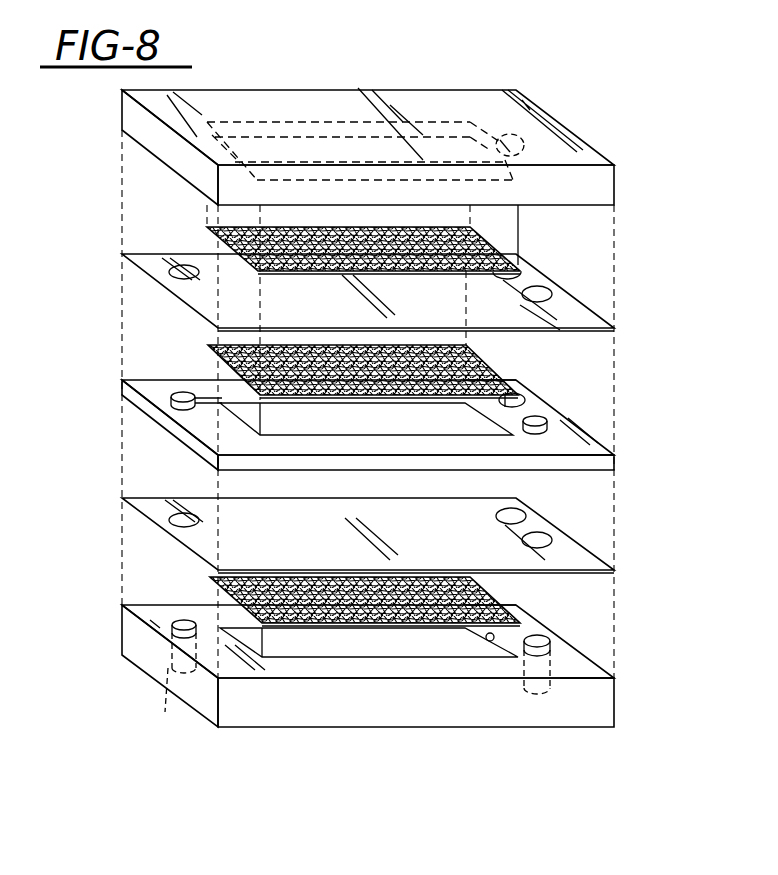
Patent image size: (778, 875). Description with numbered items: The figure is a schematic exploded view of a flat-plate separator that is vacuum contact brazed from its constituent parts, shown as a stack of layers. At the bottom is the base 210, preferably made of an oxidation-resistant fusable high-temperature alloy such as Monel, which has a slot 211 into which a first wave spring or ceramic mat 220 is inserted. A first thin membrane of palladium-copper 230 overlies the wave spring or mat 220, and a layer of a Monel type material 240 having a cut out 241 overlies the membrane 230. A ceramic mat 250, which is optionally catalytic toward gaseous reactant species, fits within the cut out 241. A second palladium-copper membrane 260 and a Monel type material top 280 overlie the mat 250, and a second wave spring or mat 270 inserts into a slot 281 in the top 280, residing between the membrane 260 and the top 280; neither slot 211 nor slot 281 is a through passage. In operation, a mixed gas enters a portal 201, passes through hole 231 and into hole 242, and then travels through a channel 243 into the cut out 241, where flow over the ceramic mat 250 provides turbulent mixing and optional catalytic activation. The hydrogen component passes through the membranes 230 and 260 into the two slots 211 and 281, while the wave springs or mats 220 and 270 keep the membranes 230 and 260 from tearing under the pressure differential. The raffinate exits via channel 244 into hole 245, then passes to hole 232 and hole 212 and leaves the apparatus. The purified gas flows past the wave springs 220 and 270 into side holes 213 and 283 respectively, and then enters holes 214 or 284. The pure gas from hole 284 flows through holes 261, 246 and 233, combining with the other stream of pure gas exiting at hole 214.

The portal 201 is at (555, 668).
The base 210 is at (123, 660).
The slot 211 is at (510, 590).
The hole 212 is at (166, 710).
The side hole 213 is at (488, 642).
The hole 214 is at (548, 638).
The first wave spring or ceramic mat 220 is at (210, 583).
The first thin membrane of palladium-copper 230 is at (145, 515).
The hole 231 is at (552, 535).
The hole 232 is at (170, 520).
The hole 233 is at (522, 508).
The layer of Monel type material 240 is at (148, 432).
The cut out 241 is at (500, 372).
The hole 242 is at (614, 455).
The channel 243 is at (548, 418).
The channel 244 is at (170, 398).
The hole 245 is at (180, 386).
The hole 246 is at (528, 396).
The ceramic mat 250 is at (208, 348).
The second palladium-copper membrane 260 is at (150, 278).
The hole 261 is at (538, 264).
The second wave spring or mat 270 is at (208, 230).
The Monel type material top 280 is at (212, 146).
The slot 281 is at (205, 140).
The side hole 283 is at (520, 125).
The hole 284 is at (577, 140).